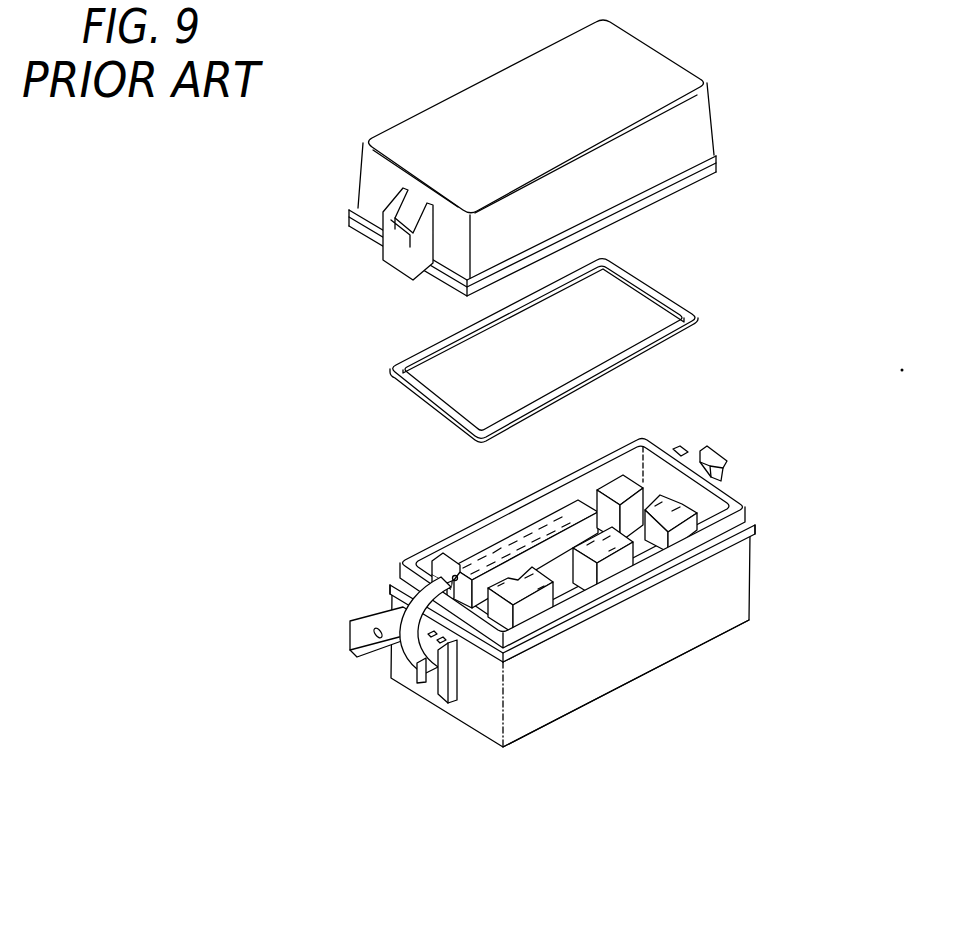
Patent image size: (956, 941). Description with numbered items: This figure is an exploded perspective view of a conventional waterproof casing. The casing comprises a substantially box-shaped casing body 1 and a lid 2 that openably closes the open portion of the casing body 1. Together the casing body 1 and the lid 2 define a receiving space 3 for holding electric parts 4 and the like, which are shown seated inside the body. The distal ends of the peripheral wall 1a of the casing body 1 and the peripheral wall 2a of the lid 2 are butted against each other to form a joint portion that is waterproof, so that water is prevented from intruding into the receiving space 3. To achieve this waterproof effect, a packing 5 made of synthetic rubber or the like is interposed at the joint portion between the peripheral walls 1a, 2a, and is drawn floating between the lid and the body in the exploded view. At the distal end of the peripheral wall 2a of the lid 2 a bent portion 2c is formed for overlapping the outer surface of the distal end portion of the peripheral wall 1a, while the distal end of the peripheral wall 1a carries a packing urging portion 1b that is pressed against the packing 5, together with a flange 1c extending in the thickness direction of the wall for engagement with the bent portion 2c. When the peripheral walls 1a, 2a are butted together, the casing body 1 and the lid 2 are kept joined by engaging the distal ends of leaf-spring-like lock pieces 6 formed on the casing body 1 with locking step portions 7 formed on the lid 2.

The casing body 1 is at (688, 665).
The peripheral wall 1a is at (737, 592).
The packing urging portion 1b is at (629, 599).
The flange 1c is at (737, 550).
The lid 2 is at (692, 62).
The peripheral wall 2a is at (703, 120).
The bent portion 2c is at (717, 163).
The receiving space 3 is at (657, 462).
The electric parts 4 is at (610, 548).
The packing 5 is at (705, 325).
The lock pieces 6 is at (405, 630).
The locking step portions 7 is at (393, 258).